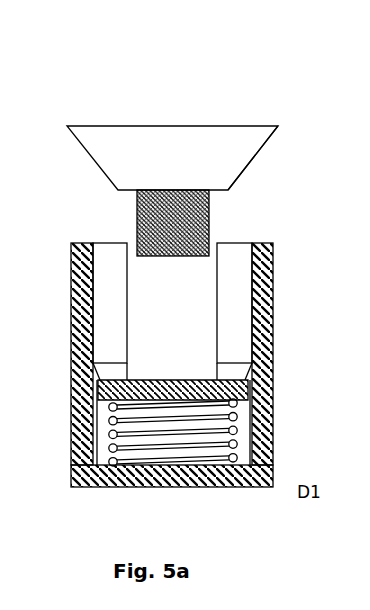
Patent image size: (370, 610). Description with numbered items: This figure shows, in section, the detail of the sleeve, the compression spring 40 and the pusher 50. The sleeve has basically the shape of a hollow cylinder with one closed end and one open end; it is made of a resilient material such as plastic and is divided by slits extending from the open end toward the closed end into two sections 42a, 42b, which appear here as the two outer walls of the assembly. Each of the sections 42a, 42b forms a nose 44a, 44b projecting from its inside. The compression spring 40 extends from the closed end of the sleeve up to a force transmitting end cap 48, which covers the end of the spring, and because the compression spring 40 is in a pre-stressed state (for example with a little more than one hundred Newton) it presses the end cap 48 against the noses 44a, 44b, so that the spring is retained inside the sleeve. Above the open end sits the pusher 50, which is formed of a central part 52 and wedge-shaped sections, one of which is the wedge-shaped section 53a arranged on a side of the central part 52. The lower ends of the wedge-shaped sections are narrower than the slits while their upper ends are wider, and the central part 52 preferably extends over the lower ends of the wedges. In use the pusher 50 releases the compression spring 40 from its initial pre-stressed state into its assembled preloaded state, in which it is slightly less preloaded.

The compression spring 40 is at (208, 432).
The first section of the sleeve 42a is at (74, 242).
The second section of the sleeve 42b is at (273, 293).
The nose of the first sleeve section 44a is at (95, 378).
The nose of the second sleeve section 44b is at (252, 380).
The force transmitting end cap 48 is at (138, 403).
The pusher 50 is at (149, 200).
The central part of the pusher 52 is at (208, 212).
The wedge-shaped section of the pusher 53a is at (242, 153).